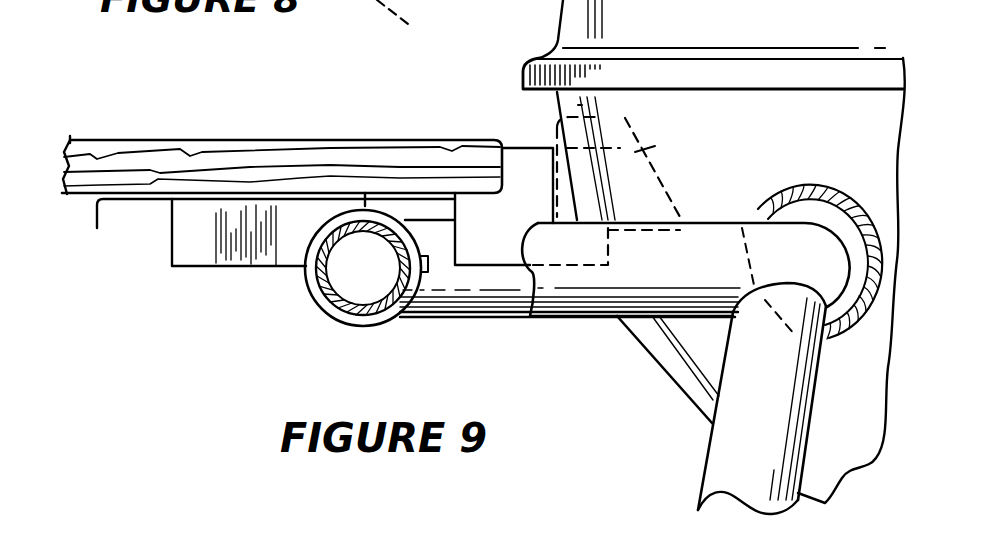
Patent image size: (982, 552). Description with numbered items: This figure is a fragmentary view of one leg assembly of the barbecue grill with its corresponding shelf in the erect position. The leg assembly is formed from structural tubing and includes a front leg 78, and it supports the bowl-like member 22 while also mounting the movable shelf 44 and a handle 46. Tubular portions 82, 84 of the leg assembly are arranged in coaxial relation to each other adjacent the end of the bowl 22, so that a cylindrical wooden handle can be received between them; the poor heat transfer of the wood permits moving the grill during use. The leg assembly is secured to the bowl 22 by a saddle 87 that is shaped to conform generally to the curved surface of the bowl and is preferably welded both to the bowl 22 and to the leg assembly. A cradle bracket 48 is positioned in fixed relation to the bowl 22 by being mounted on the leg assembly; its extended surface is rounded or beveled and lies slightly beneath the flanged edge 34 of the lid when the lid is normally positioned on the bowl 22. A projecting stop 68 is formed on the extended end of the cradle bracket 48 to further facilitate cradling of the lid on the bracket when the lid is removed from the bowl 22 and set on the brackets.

The bowl-like member 22 is at (660, 362).
The flanged edge 34 is at (772, 62).
The movable shelf 44 is at (245, 147).
The handle 46 is at (293, 304).
The cradle bracket 48 is at (523, 136).
The projecting stop 68 is at (645, 148).
The front leg 78 is at (723, 448).
The tubular portion 82 is at (462, 300).
The tubular portion 84 is at (658, 297).
The saddle 87 is at (771, 203).